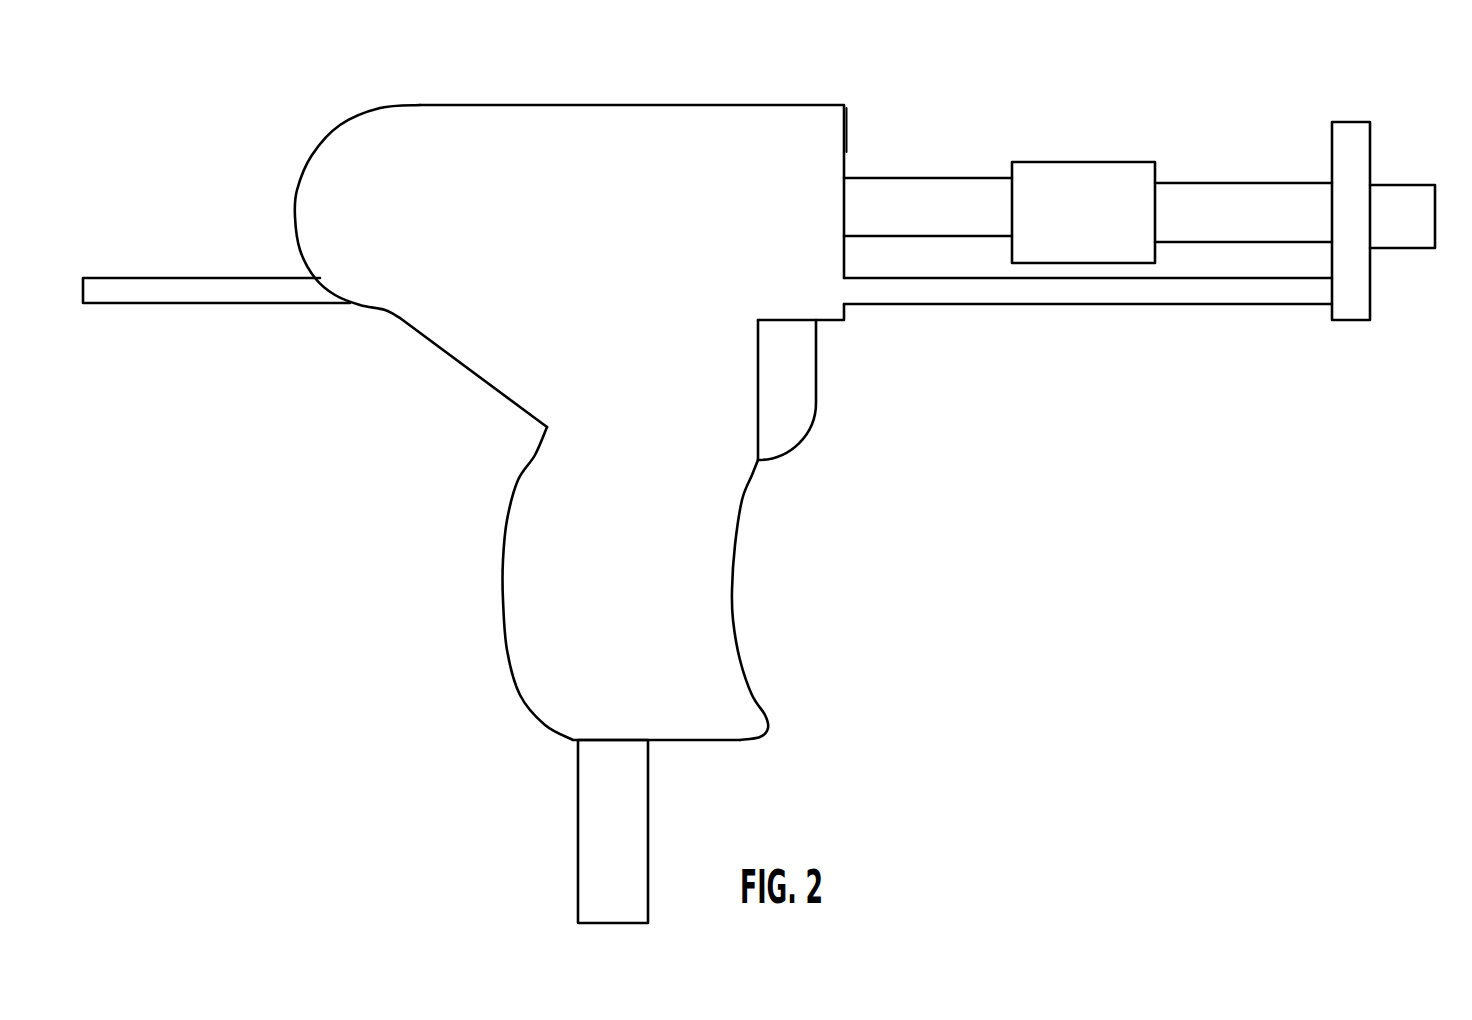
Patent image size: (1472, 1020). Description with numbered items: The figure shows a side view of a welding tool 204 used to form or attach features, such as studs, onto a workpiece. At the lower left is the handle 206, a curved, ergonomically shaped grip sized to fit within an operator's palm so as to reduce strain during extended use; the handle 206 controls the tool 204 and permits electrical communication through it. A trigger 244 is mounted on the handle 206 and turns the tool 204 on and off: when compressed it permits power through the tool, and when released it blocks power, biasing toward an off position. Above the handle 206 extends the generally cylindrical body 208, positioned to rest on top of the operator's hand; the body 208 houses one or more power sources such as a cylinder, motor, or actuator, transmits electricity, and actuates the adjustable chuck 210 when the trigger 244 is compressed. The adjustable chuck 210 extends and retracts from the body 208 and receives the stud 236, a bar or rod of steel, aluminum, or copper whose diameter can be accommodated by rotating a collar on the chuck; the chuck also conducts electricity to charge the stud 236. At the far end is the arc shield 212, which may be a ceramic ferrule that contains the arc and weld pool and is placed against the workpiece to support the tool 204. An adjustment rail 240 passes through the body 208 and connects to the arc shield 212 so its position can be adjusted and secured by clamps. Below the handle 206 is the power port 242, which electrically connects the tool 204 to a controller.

The tool 204 is at (1298, 51).
The body 208 is at (613, 198).
The handle 206 is at (649, 520).
The trigger 244 is at (816, 378).
The adjustable chuck 210 is at (1098, 216).
The stud 236 is at (1268, 226).
The arc shield 212 is at (1350, 133).
The adjustment rail 240 is at (1012, 290).
The power port 242 is at (632, 846).